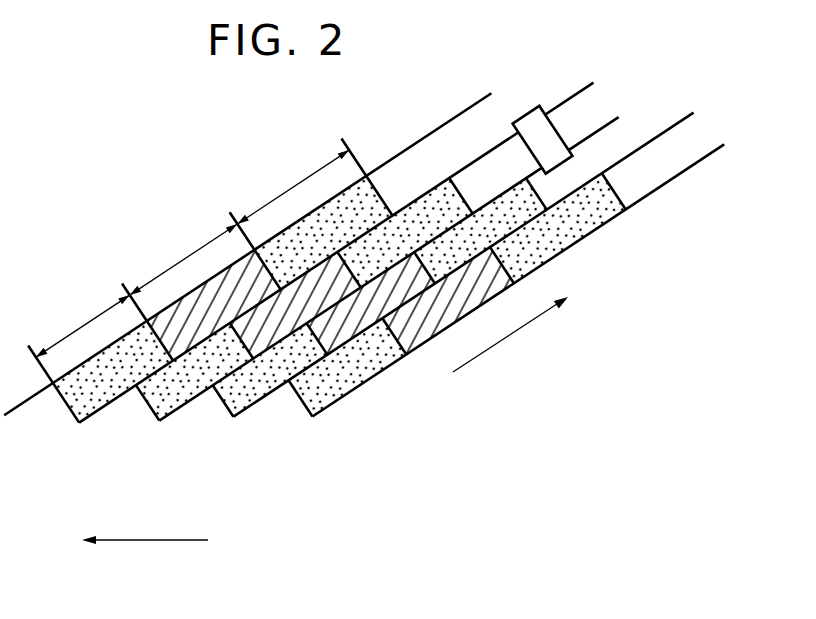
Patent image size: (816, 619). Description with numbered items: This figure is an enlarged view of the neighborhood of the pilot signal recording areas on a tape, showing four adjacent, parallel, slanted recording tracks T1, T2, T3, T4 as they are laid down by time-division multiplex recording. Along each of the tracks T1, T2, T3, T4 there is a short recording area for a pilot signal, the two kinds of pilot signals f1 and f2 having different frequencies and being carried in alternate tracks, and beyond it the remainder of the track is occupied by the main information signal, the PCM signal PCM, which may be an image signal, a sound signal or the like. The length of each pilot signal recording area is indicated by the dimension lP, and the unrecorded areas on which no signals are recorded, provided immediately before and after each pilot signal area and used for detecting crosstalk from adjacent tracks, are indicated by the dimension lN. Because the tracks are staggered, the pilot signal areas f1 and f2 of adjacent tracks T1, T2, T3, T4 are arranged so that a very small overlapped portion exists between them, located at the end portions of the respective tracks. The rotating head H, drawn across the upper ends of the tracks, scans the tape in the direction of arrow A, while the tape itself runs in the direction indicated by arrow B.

The track T1 is at (68, 412).
The track T2 is at (148, 410).
The track T3 is at (220, 412).
The track T4 is at (300, 407).
The rotating head H is at (530, 120).
The PCM signal PCM is at (558, 153).
The pilot signal f1 is at (372, 303).
The pilot signal f2 is at (291, 302).
The unrecorded area length lN is at (185, 243).
The pilot signal recording area length lP is at (177, 249).
The scanning direction of rotating head A is at (520, 328).
The direction of tape running B is at (135, 540).